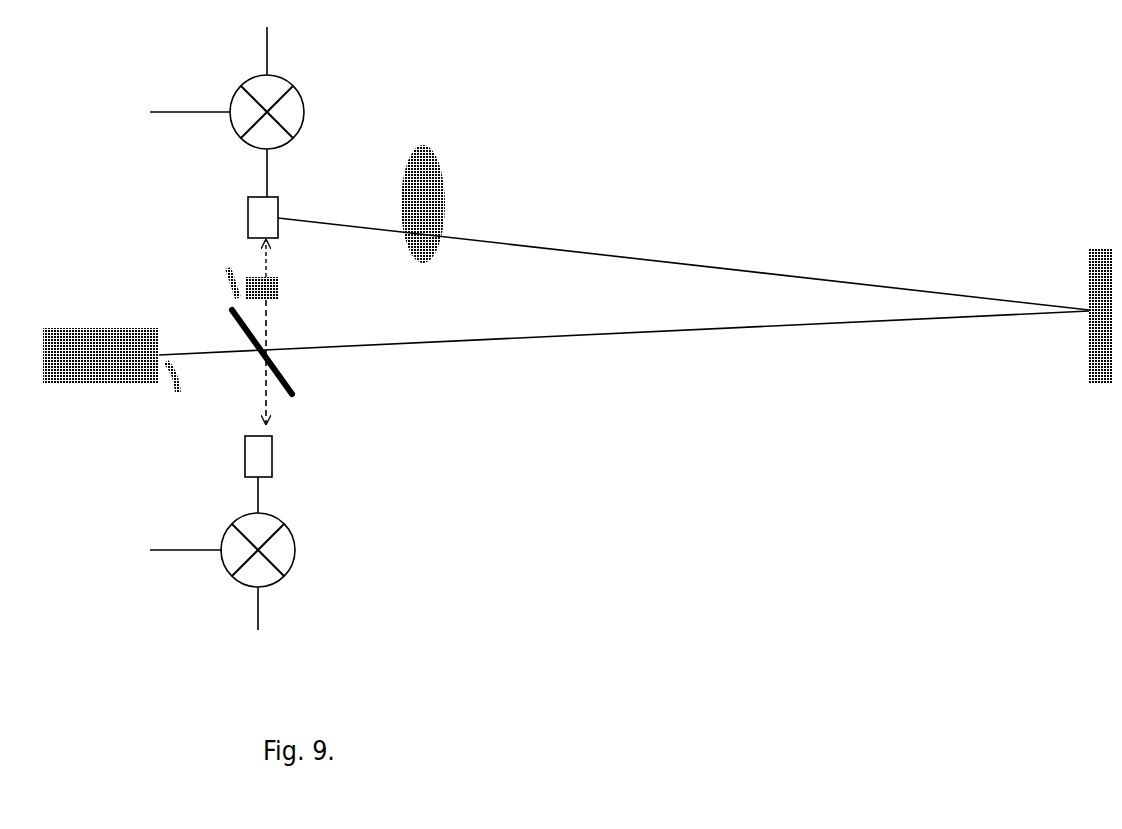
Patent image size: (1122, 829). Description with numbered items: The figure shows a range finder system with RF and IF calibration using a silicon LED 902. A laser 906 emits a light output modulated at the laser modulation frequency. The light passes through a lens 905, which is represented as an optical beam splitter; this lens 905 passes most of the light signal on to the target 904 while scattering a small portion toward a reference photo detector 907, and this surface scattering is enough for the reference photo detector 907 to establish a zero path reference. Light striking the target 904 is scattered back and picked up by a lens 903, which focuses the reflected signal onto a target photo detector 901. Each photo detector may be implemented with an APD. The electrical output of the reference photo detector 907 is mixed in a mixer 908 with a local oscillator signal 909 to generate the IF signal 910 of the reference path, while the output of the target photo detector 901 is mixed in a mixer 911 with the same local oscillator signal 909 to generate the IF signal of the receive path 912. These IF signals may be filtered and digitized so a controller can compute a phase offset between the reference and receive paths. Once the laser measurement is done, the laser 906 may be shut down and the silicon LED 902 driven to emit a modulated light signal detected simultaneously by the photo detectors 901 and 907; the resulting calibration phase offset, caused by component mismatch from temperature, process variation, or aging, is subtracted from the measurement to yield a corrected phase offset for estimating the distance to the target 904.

The target photo detector 901 is at (245, 215).
The silicon LED 902 is at (281, 291).
The lens 903 is at (434, 148).
The target 904 is at (1081, 346).
The lens (optical beam splitter) 905 is at (228, 315).
The laser 906 is at (101, 371).
The reference photo detector 907 is at (244, 443).
The mixer 908 is at (287, 531).
The local oscillator signal 909 is at (261, 331).
The IF signal of the reference path 910 is at (161, 550).
The mixer 911 is at (292, 88).
The IF signal of the receive path 912 is at (171, 111).